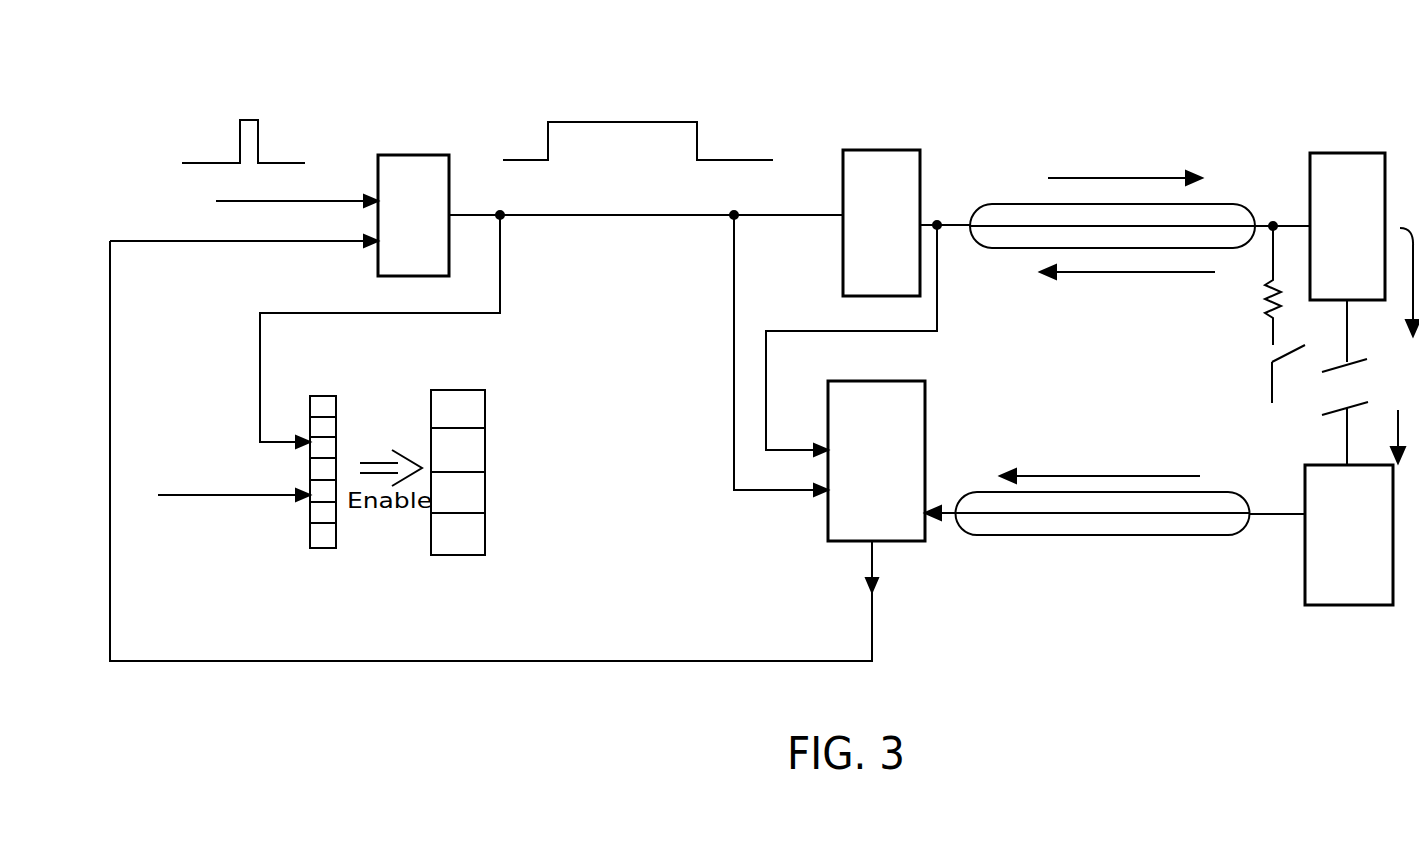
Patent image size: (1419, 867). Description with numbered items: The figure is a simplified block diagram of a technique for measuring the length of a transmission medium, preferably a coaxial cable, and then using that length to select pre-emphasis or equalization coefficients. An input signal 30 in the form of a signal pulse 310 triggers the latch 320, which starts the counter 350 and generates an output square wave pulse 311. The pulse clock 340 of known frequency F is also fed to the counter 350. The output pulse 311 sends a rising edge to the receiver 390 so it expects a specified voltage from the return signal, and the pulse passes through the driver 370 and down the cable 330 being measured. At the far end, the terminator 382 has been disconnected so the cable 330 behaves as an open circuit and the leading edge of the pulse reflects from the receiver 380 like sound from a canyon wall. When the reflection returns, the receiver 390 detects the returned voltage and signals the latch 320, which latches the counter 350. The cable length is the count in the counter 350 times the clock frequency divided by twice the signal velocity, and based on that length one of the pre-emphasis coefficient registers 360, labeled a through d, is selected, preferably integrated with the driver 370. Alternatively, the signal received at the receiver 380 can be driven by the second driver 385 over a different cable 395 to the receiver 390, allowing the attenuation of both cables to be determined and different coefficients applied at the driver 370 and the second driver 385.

The input signal 30 is at (203, 120).
The signal pulse 310 is at (260, 128).
The output square wave pulse 311 is at (700, 128).
The latch 320 is at (425, 153).
The cable 330 is at (957, 222).
The pulse clock 340 is at (234, 500).
The counter 350 is at (325, 395).
The pre-emphasis coefficient registers 360 is at (489, 395).
The driver 370 is at (882, 148).
The receiver 380 is at (1348, 152).
The terminator 382 is at (1265, 352).
The second driver 385 is at (1305, 572).
The receiver 390 is at (926, 398).
The different cable 395 is at (947, 514).